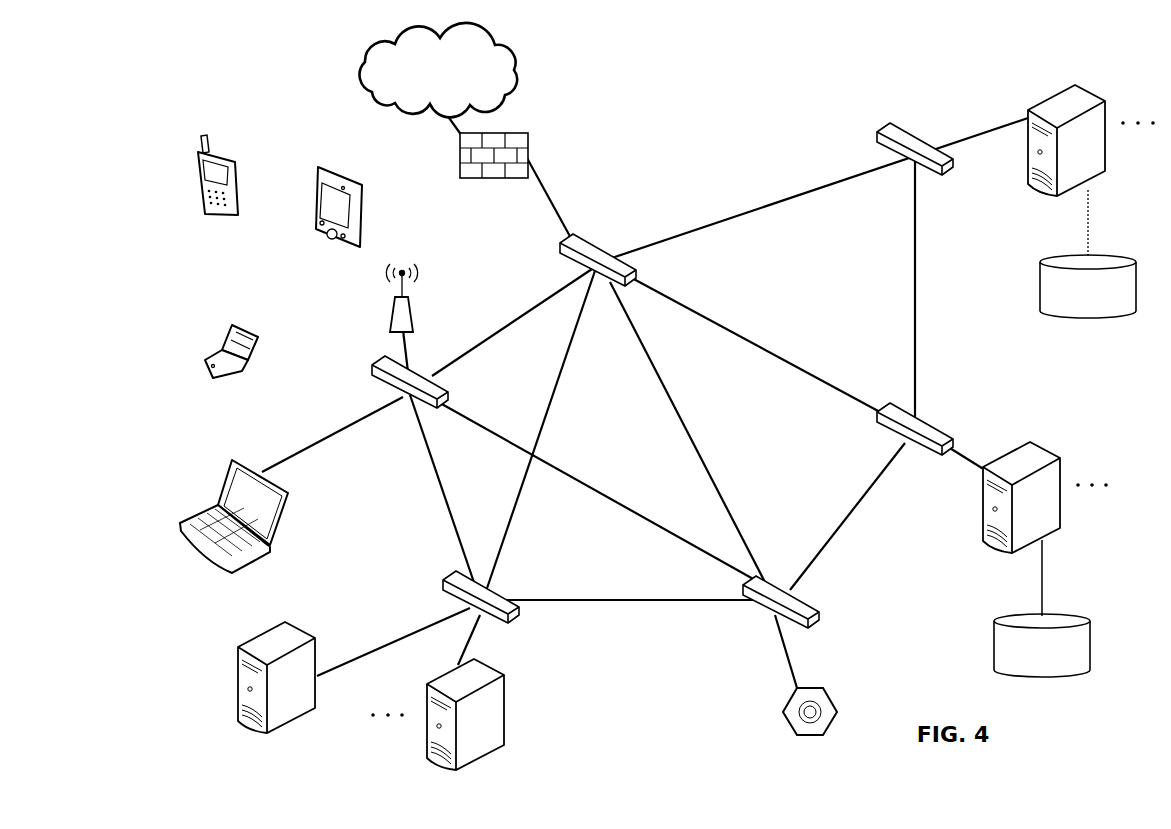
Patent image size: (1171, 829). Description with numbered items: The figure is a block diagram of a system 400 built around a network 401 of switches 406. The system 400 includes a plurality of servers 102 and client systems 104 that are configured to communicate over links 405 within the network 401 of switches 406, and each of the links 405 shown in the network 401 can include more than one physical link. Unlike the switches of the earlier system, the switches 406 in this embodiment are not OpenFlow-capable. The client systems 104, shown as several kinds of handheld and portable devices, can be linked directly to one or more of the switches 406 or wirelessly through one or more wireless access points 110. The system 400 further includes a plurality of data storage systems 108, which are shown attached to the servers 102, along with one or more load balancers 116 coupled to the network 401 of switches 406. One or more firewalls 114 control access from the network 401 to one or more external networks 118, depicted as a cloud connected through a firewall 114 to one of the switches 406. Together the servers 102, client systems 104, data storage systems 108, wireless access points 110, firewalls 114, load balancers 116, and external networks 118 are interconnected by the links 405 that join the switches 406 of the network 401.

The servers 102 is at (1090, 95).
The client systems 104 is at (232, 152).
The data storage systems 108 is at (1074, 301).
The wireless access points 110 is at (416, 312).
The firewalls 114 is at (478, 132).
The load balancers 116 is at (815, 688).
The external networks 118 is at (424, 82).
The system 400 is at (647, 77).
The network 401 is at (787, 130).
The links 405 is at (548, 297).
The switches 406 is at (588, 237).